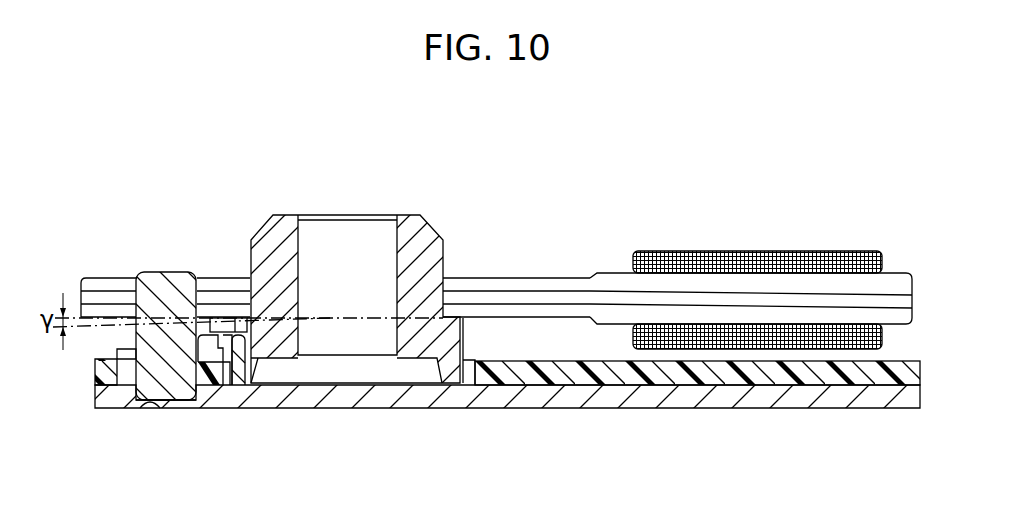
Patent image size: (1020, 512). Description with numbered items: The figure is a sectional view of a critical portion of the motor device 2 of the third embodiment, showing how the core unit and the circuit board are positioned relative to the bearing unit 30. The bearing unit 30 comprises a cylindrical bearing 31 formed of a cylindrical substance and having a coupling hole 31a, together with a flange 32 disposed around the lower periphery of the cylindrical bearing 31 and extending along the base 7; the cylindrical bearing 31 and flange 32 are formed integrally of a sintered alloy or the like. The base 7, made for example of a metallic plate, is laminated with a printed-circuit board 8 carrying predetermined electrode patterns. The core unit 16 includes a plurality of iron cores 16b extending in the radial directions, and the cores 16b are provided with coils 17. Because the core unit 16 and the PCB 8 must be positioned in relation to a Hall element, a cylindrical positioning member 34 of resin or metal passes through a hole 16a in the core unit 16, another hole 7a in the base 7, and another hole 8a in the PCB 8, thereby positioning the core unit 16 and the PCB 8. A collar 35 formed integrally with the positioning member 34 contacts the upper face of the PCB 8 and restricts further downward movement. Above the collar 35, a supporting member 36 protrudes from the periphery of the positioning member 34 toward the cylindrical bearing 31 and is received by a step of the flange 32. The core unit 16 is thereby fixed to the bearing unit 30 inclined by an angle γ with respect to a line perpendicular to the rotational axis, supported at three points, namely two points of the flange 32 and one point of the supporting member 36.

The motor device 2 is at (591, 192).
The base 7 is at (871, 395).
The hole 7a is at (150, 408).
The printed-circuit board 8 is at (812, 375).
The hole 8a is at (178, 404).
The core unit 16 is at (527, 287).
The hole 16a is at (148, 272).
The iron core 16b is at (622, 300).
The coil 17 is at (773, 250).
The bearing unit 30 is at (372, 261).
The cylindrical bearing 31 is at (268, 240).
The coupling hole 31a is at (396, 262).
The flange 32 is at (473, 352).
The positioning member 34 is at (171, 283).
The collar 35 is at (113, 352).
The supporting member 36 is at (240, 336).